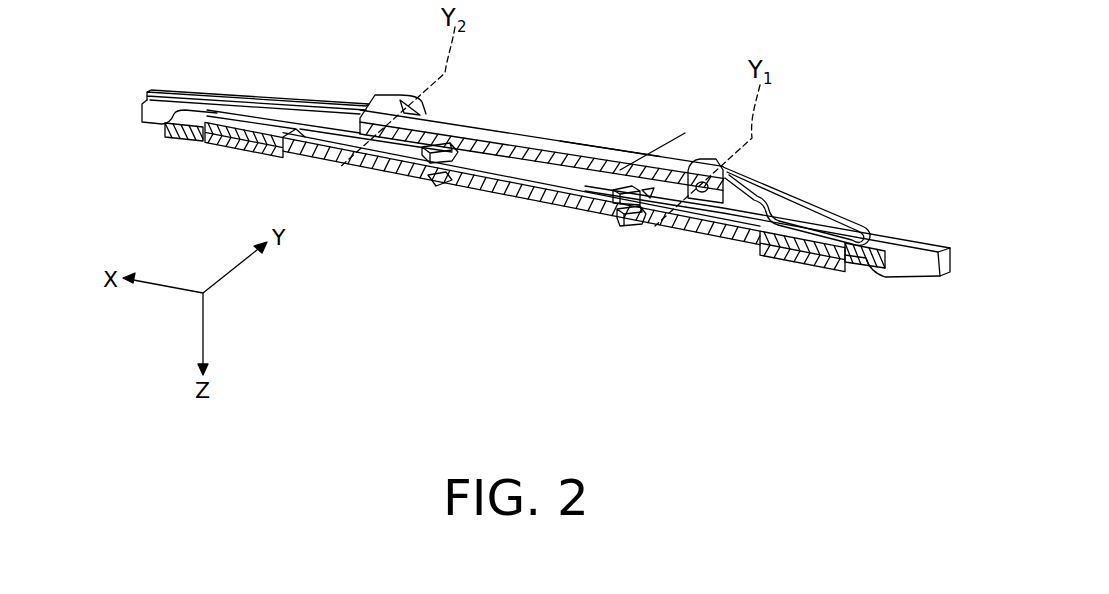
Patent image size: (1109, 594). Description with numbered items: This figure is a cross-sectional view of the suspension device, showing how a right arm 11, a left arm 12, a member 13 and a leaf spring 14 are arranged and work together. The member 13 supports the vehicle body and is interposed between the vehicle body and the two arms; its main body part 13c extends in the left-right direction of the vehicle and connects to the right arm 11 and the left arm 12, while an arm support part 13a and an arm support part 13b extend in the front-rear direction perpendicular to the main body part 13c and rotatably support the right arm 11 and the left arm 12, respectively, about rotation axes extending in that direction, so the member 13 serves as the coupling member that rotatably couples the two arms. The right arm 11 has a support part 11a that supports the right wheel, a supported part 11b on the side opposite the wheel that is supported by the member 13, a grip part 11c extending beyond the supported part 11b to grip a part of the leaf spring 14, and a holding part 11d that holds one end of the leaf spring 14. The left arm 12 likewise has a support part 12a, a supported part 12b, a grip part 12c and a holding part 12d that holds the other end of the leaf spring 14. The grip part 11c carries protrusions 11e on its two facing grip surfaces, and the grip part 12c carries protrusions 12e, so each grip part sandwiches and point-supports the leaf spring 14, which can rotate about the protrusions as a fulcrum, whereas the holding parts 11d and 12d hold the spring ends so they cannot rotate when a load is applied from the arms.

The right arm 11 is at (848, 216).
The support part 11a is at (800, 203).
The supported part 11b is at (740, 182).
The grip part 11c is at (640, 228).
The holding part 11d is at (797, 272).
The protrusions 11e is at (613, 208).
The left arm 12 is at (291, 100).
The support part 12a is at (240, 106).
The supported part 12b is at (420, 106).
The grip part 12c is at (438, 185).
The holding part 12d is at (233, 152).
The protrusions 12e is at (402, 175).
The member 13 is at (520, 133).
The arm support part 13a is at (700, 160).
The arm support part 13b is at (378, 110).
The main body part 13c is at (607, 160).
The leaf spring 14 is at (503, 190).